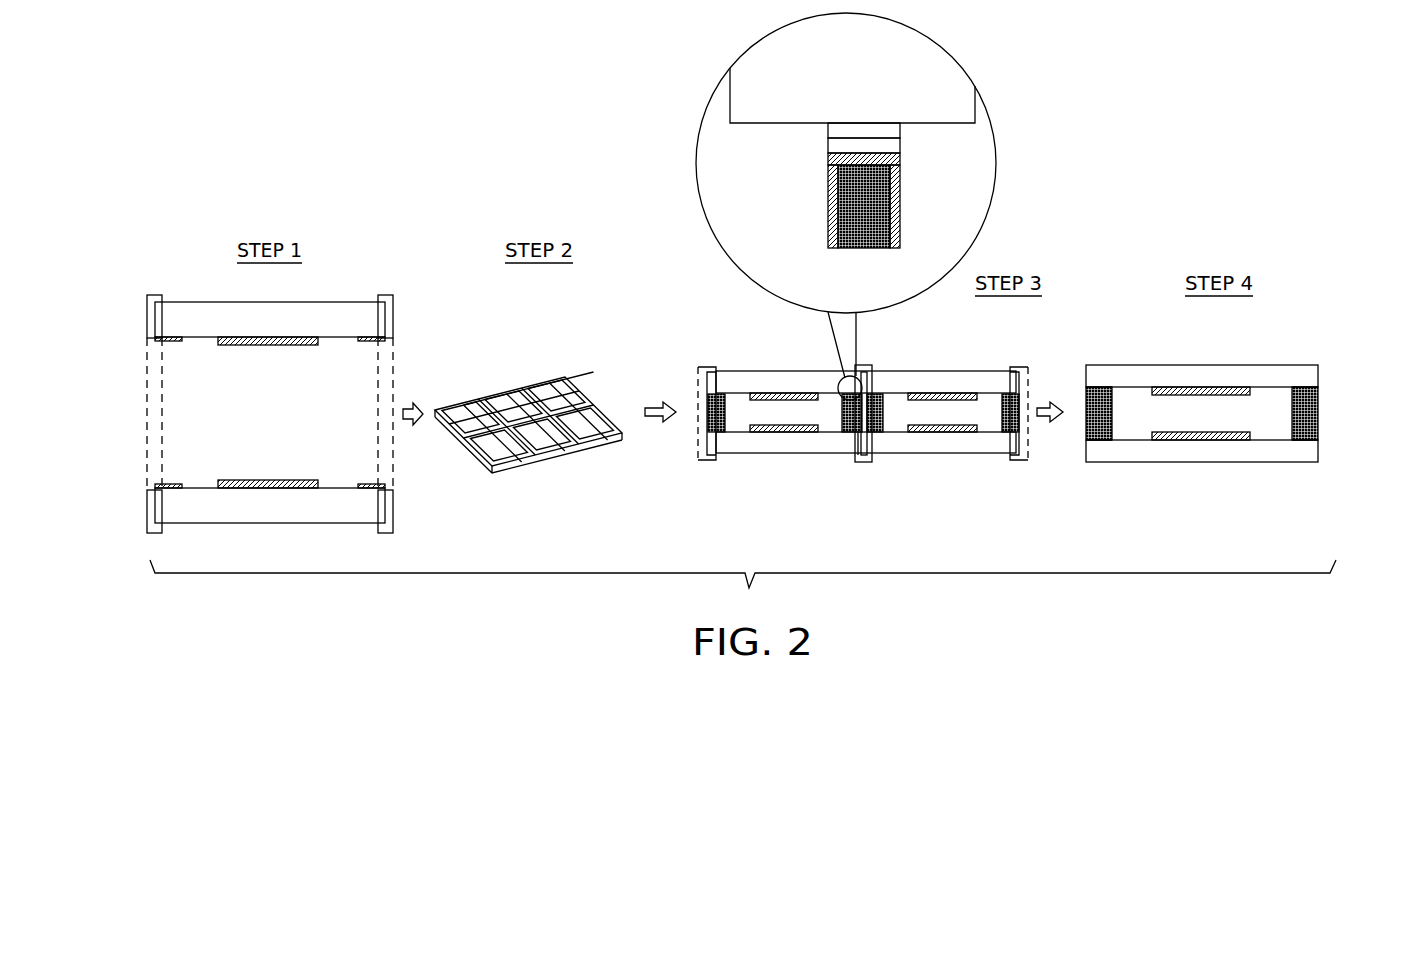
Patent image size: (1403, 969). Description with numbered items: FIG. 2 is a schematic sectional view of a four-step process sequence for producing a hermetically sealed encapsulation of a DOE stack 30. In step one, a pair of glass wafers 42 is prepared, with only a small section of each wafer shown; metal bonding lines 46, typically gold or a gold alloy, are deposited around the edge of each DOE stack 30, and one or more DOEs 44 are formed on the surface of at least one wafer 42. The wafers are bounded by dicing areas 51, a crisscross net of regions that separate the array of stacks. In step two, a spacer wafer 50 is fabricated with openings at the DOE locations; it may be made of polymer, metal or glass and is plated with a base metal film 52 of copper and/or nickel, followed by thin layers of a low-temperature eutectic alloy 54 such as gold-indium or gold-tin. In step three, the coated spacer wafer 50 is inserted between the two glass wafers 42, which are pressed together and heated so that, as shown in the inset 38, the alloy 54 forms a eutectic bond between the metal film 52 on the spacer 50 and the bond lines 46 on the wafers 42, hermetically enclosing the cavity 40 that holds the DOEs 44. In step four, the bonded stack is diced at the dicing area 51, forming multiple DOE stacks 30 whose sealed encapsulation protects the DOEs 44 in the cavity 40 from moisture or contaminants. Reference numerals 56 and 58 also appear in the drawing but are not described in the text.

The DOE stack 30 is at (1308, 308).
The inset 38 is at (950, 52).
The cavity 40 is at (985, 412).
The glass wafer 42 is at (160, 320).
The DOE 44 is at (283, 345).
The metal bonding line 46 is at (176, 342).
The spacer wafer 50 is at (538, 386).
The dicing area 51 is at (153, 295).
The base metal film 52 is at (900, 180).
The low-temperature eutectic alloy 54 is at (900, 152).
The solder joint 56 is at (1086, 387).
The separation gap 58 is at (862, 443).